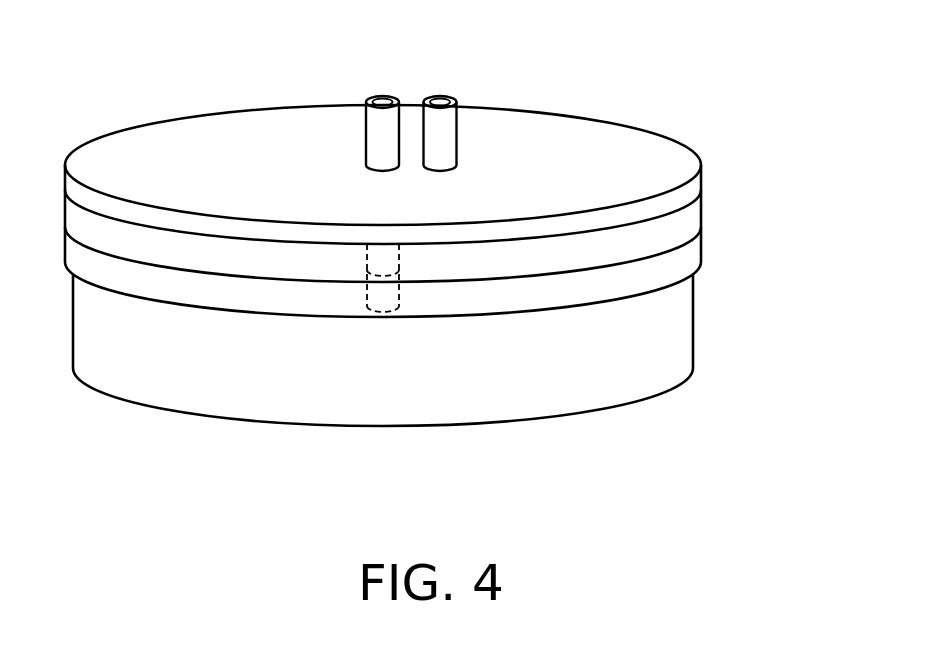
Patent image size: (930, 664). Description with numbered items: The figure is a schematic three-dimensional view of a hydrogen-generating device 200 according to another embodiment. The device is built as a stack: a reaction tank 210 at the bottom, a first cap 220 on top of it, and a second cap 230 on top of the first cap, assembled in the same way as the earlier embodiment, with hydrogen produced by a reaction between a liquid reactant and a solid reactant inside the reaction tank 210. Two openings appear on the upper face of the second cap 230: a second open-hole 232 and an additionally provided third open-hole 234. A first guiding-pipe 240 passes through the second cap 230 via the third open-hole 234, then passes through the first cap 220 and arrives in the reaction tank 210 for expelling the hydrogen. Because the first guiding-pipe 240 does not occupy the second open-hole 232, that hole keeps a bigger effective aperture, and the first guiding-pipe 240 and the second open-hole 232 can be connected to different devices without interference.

The hydrogen-generating device 200 is at (688, 482).
The reaction tank 210 is at (683, 330).
The first cap 220 is at (695, 213).
The second cap 230 is at (698, 180).
The second open-hole 232 is at (440, 168).
The third open-hole 234 is at (383, 168).
The first guiding-pipe 240 is at (388, 313).